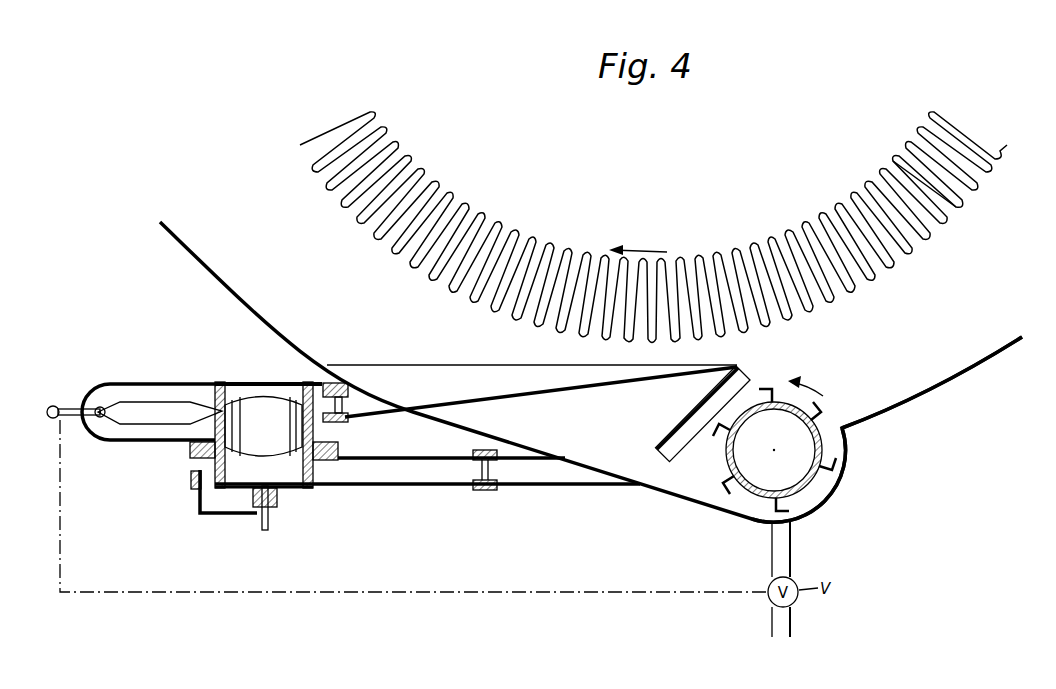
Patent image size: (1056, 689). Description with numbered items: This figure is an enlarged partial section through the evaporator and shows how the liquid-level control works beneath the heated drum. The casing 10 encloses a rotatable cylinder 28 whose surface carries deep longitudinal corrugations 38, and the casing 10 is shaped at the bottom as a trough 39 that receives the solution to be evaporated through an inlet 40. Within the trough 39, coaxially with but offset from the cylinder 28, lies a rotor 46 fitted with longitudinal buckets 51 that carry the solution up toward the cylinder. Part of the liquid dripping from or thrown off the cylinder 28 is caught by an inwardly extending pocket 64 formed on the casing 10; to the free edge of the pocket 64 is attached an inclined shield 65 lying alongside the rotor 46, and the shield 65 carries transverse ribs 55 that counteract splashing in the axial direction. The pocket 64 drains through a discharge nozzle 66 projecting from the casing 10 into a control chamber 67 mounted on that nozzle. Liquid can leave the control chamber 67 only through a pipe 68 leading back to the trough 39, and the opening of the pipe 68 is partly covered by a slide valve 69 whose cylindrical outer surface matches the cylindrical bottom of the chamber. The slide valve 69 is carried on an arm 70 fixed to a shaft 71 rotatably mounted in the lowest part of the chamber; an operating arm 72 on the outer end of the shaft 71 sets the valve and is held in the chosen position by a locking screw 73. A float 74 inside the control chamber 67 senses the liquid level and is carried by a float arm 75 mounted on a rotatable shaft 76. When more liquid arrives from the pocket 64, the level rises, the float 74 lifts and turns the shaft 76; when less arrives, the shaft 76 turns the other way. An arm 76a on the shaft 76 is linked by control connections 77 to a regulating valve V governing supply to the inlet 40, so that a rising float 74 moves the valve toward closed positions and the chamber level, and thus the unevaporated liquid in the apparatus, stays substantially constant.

The casing 10 is at (978, 371).
The cylinder 28 is at (975, 132).
The longitudinal corrugations 38 is at (905, 260).
The trough 39 is at (828, 507).
The inlet 40 is at (792, 558).
The rotor 46 is at (748, 496).
The longitudinal buckets 51 is at (848, 447).
The transverse ribs 55 is at (668, 448).
The pocket 64 is at (405, 363).
The shield 65 is at (648, 440).
The discharge nozzle 66 is at (342, 382).
The control chamber 67 is at (202, 381).
The pipe 68 is at (408, 486).
The slide valve 69 is at (320, 470).
The arm 70 is at (288, 489).
The shaft 71 is at (266, 532).
The operating arm 72 is at (216, 516).
The locking screw 73 is at (195, 491).
The float 74 is at (187, 444).
The float arm 75 is at (133, 417).
The shaft 76 is at (103, 417).
The arm 76a is at (51, 403).
The control connections 77 is at (63, 548).